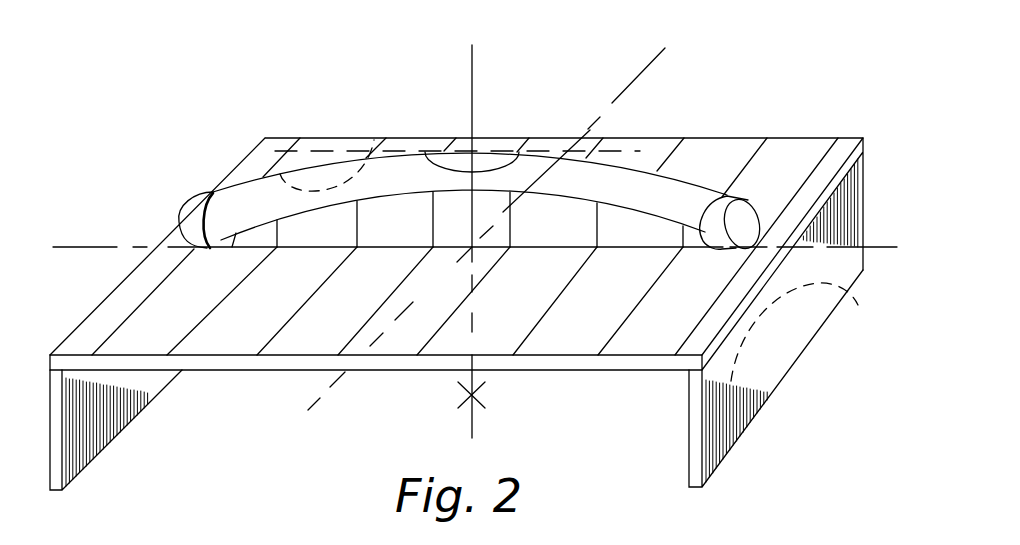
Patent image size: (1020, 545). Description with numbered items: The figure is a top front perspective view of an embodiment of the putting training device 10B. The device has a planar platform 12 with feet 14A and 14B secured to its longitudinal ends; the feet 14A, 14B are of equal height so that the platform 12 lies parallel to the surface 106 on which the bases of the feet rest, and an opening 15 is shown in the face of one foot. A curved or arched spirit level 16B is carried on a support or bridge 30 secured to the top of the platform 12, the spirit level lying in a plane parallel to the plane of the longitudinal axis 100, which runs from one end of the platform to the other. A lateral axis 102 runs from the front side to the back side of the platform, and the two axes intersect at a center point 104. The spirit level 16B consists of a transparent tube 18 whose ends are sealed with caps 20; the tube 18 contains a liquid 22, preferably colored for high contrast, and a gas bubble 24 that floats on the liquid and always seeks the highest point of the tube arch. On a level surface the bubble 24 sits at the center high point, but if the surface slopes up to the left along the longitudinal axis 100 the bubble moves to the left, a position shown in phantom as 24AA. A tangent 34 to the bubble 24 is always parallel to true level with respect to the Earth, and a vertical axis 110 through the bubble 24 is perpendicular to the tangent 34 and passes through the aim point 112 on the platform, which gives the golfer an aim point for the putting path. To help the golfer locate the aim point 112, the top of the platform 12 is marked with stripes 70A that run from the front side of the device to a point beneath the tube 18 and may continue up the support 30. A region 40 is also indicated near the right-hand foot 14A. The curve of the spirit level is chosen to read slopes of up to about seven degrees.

The putting training device 10B is at (192, 100).
The planar platform 12 is at (90, 325).
The foot 14A is at (718, 453).
The foot 14B is at (97, 445).
The opening in leg 15 is at (808, 338).
The curved or arched spirit level 16B is at (673, 195).
The transparent tube 18 is at (627, 163).
The caps 20 is at (748, 229).
The liquid 22 is at (535, 165).
The gas bubble 24 is at (480, 160).
The bubble in phantom 24AA is at (295, 150).
The support or bridge 30 is at (631, 233).
The tangent 34 is at (343, 138).
The right region 40 is at (830, 447).
The stripes 70A is at (291, 345).
The longitudinal axis 100 is at (93, 247).
The lateral axis 102 is at (640, 82).
The center point 104 is at (472, 248).
The surface 106 is at (630, 477).
The vertical axis 110 is at (472, 58).
The aim point 112 is at (470, 397).